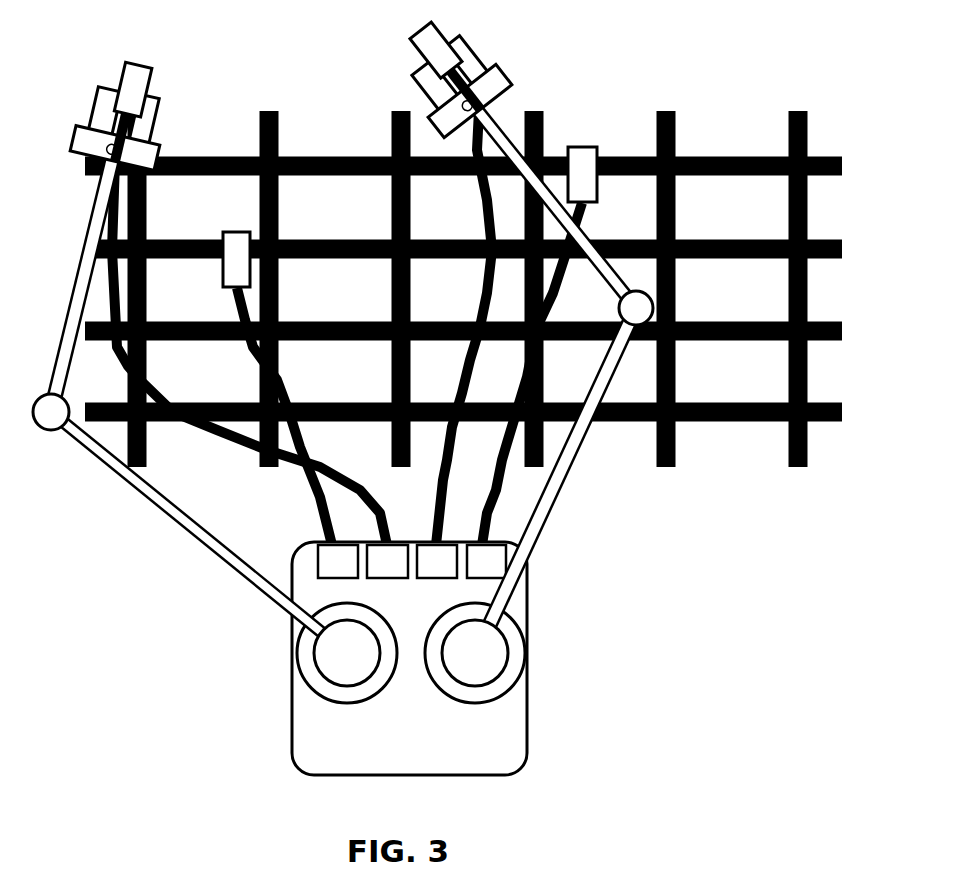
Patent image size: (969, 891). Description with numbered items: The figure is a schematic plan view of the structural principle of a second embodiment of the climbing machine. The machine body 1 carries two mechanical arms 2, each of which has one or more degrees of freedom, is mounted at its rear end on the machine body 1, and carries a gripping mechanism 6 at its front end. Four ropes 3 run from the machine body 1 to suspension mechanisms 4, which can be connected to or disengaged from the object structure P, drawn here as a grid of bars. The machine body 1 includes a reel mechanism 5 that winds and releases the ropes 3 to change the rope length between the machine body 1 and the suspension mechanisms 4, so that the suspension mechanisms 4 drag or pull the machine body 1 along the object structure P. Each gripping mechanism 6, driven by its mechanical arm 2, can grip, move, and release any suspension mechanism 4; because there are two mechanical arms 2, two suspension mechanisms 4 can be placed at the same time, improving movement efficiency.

The machine body 1 is at (307, 715).
The mechanical arm 2 is at (148, 493).
The rope 3 is at (480, 292).
The suspension mechanism 4 is at (133, 75).
The reel mechanism 5 is at (342, 562).
The gripping mechanism 6 is at (88, 143).
The object structure P is at (672, 111).